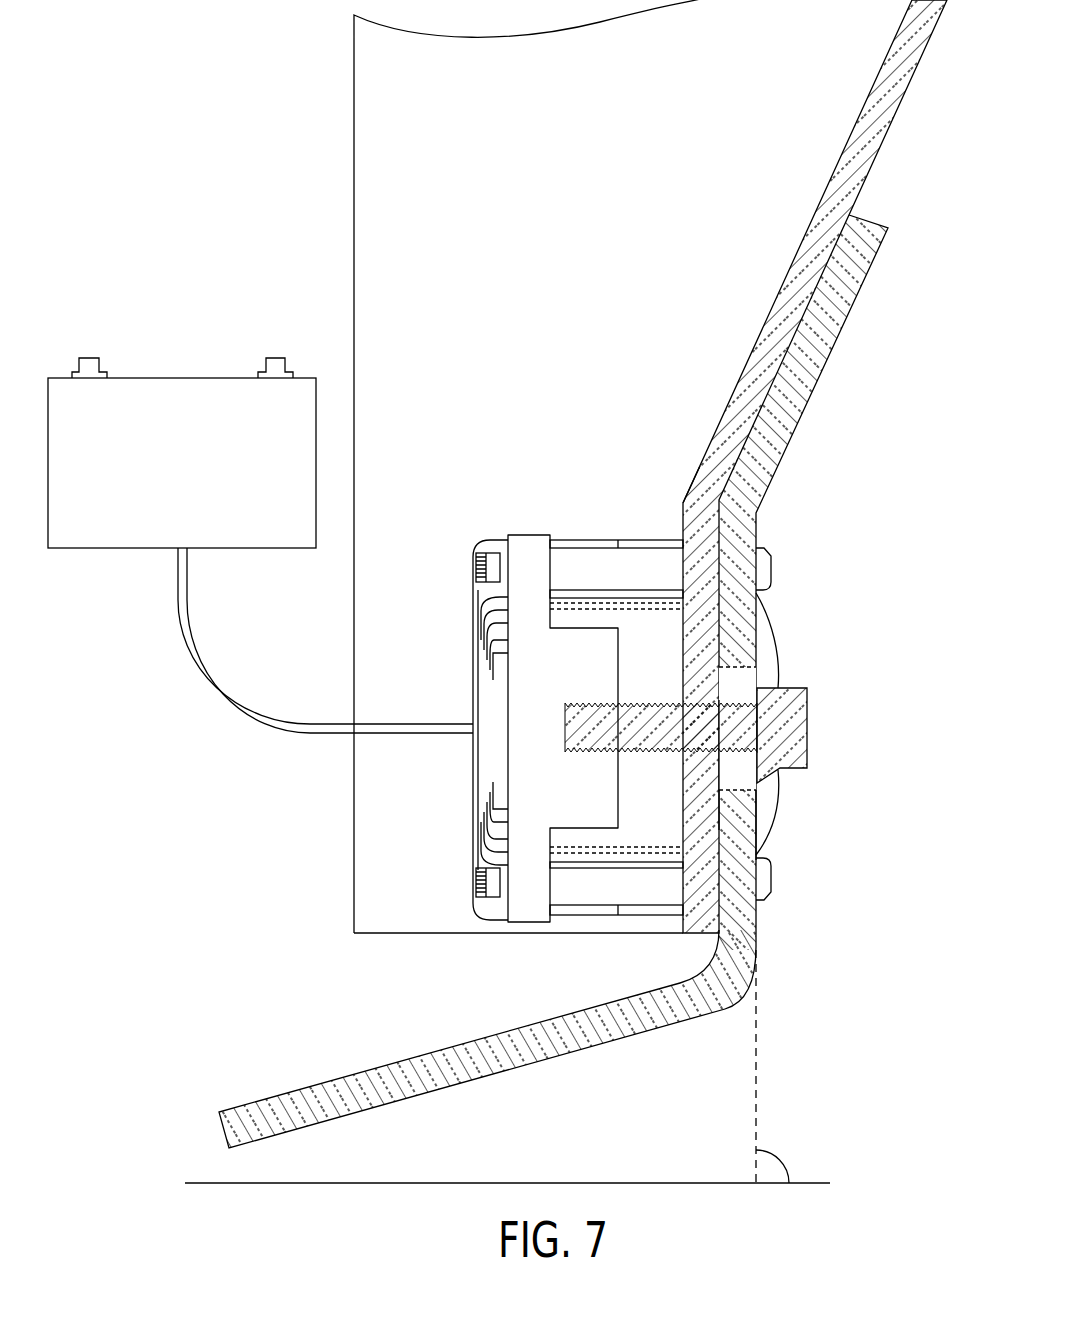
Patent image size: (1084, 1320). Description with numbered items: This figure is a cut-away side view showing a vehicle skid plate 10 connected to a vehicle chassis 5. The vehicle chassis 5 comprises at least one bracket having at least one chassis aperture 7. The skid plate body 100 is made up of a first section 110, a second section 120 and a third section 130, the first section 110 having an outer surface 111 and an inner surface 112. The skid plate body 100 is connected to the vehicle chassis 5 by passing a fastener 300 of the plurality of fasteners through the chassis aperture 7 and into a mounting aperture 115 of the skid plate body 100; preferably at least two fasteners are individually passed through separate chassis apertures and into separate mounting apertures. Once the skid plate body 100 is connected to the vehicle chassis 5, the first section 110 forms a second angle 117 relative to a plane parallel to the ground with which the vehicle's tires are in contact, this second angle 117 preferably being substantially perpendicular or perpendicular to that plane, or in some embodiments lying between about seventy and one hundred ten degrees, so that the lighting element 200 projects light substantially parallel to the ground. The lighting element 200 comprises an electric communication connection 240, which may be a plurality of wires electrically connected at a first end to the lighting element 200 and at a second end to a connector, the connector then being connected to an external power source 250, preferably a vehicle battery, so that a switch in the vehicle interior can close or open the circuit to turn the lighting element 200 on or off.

The vehicle chassis 5 is at (877, 135).
The vehicle skid plate 10 is at (583, 574).
The third section 130 is at (820, 370).
The skid plate body 100 is at (553, 681).
The first section 110 is at (752, 624).
The inner surface 112 is at (718, 537).
The mounting aperture 115 is at (745, 689).
The fastener 300 is at (810, 730).
The outer surface 111 is at (758, 806).
The chassis aperture 7 is at (712, 765).
The lighting element 200 is at (644, 648).
The external power source 250 is at (185, 378).
The electric communication connection 240 is at (223, 696).
The second section 120 is at (370, 1080).
The second angle 117 is at (776, 1158).